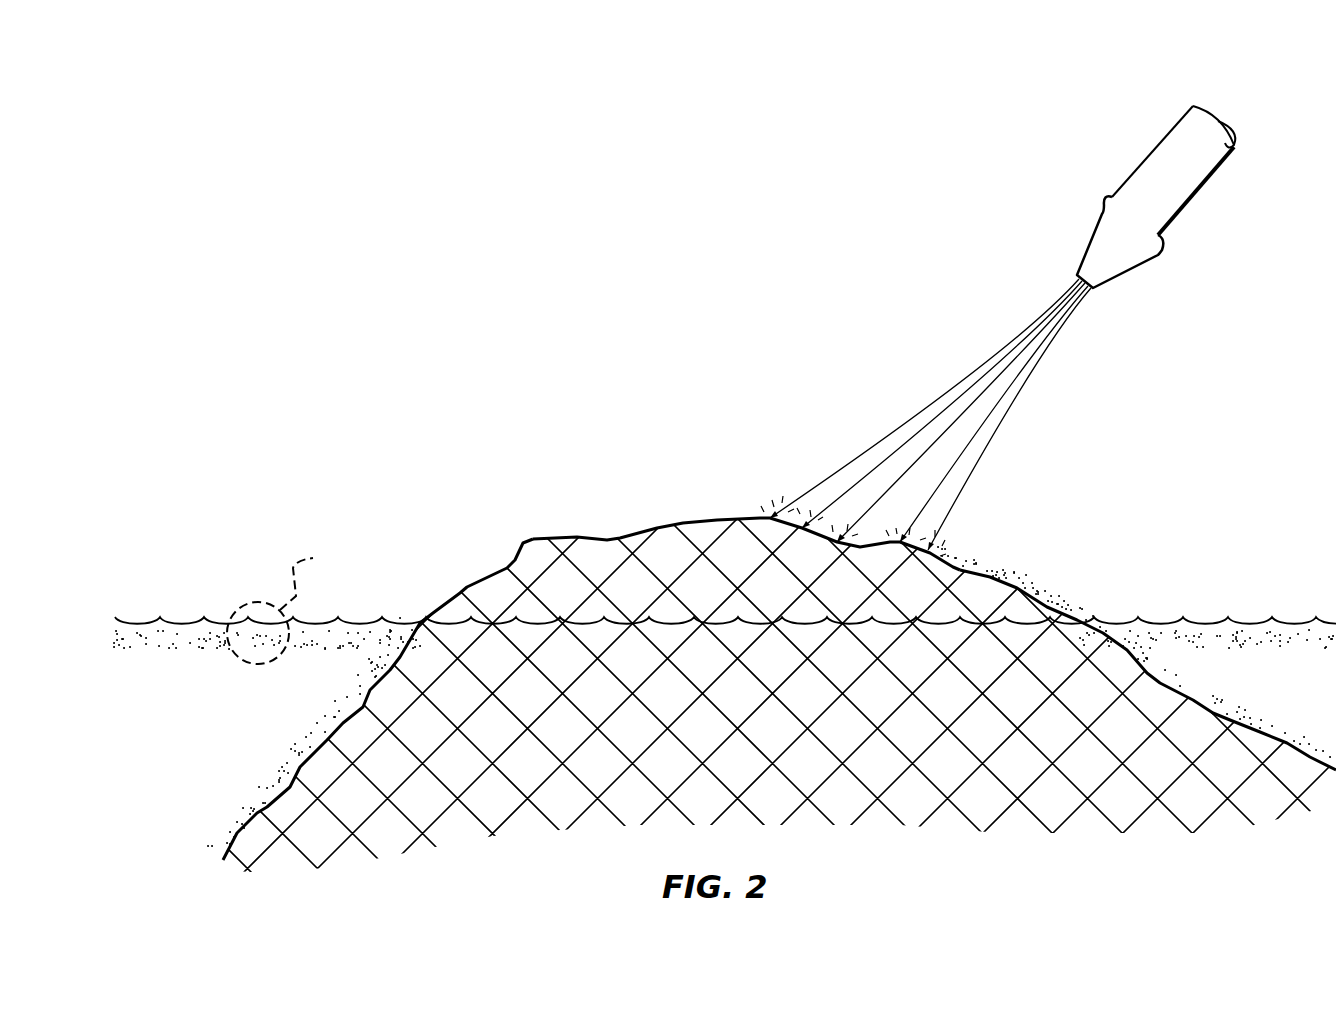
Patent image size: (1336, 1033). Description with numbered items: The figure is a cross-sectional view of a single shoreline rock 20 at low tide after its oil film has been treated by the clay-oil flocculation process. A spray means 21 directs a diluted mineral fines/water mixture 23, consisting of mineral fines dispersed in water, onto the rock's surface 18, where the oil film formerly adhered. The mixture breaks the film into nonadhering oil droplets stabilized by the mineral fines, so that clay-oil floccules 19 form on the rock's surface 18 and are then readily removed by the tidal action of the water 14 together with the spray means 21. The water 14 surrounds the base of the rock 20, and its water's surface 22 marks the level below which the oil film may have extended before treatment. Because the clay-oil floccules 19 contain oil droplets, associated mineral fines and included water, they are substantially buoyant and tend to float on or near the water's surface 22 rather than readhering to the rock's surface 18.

The water 14 is at (1314, 698).
The rock's surface 18 is at (657, 528).
The clay-oil floccules 19 is at (251, 640).
The shoreline rock 20 is at (548, 558).
The spray means 21 is at (1145, 160).
The water's surface 22 is at (1197, 620).
The diluted mineral fines/water mixture 23 is at (900, 430).